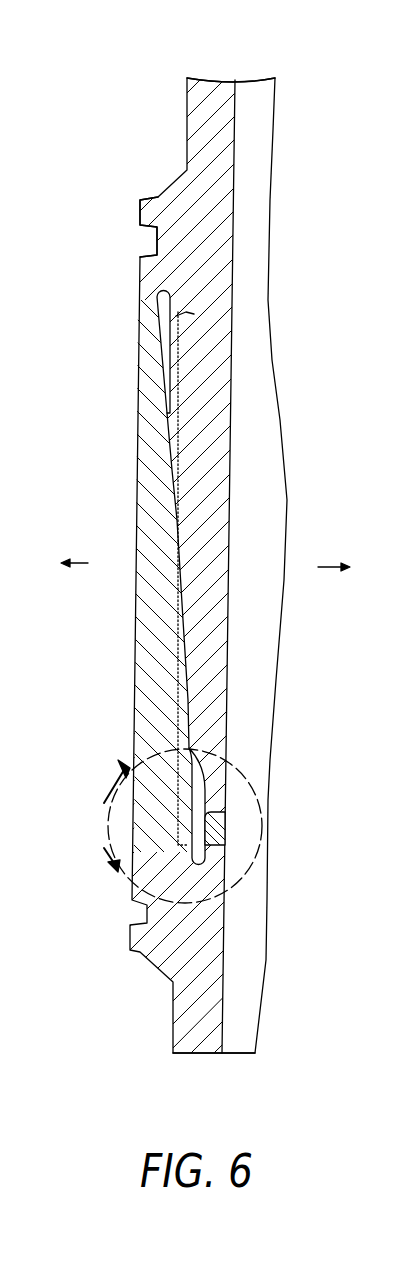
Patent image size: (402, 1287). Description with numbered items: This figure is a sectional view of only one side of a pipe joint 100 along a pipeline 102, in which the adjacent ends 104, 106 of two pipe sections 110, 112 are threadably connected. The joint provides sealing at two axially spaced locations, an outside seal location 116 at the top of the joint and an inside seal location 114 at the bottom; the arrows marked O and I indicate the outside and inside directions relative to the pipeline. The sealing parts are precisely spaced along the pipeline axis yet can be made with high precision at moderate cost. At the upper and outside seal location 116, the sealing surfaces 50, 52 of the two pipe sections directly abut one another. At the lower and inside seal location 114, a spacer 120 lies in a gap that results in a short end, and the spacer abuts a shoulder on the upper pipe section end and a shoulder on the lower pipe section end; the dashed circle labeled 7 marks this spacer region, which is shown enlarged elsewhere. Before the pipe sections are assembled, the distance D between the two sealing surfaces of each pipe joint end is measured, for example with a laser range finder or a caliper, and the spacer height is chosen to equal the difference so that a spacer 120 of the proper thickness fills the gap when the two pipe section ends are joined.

The pipe joint 100 is at (330, 88).
The pipeline 102 is at (252, 78).
The end of pipe section 104 is at (221, 453).
The end of pipe section 106 is at (148, 473).
The pipe section 110 is at (277, 143).
The pipe section 112 is at (224, 946).
The lower and inside seal location 114 is at (236, 848).
The upper and outside seal location 116 is at (130, 273).
The spacer 120 is at (207, 830).
The sealing surface 50 is at (158, 318).
The sealing surface 52 is at (178, 313).
The detail section 7 is at (178, 826).
The distance between sealing surfaces D is at (172, 683).
The outer direction O is at (83, 564).
The inner direction I is at (328, 567).